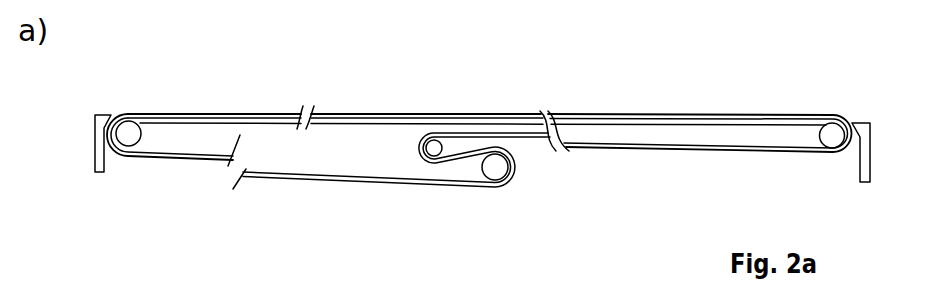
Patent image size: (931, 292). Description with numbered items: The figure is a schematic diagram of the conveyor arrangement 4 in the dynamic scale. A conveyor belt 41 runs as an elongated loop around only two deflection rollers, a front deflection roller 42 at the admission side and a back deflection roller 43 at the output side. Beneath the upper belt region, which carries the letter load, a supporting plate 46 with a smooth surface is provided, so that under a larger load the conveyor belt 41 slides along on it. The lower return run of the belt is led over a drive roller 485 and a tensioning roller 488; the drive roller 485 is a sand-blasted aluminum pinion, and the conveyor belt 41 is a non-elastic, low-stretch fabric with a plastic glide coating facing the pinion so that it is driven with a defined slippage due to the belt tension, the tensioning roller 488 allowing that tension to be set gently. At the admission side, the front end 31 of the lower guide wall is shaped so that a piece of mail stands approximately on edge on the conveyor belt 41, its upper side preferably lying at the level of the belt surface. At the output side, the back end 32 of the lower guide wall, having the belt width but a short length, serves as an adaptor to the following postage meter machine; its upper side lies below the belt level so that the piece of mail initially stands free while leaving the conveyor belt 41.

The conveyor arrangement 4 is at (303, 110).
The front end of the lower guide wall 31 is at (106, 114).
The back end of the lower guide wall 32 is at (871, 124).
The conveyor belt 41 is at (256, 114).
The front deflection roller 42 is at (122, 133).
The back deflection roller 43 is at (828, 121).
The supporting plate 46 is at (620, 125).
The drive roller 485 is at (434, 148).
The tensioning roller 488 is at (495, 167).